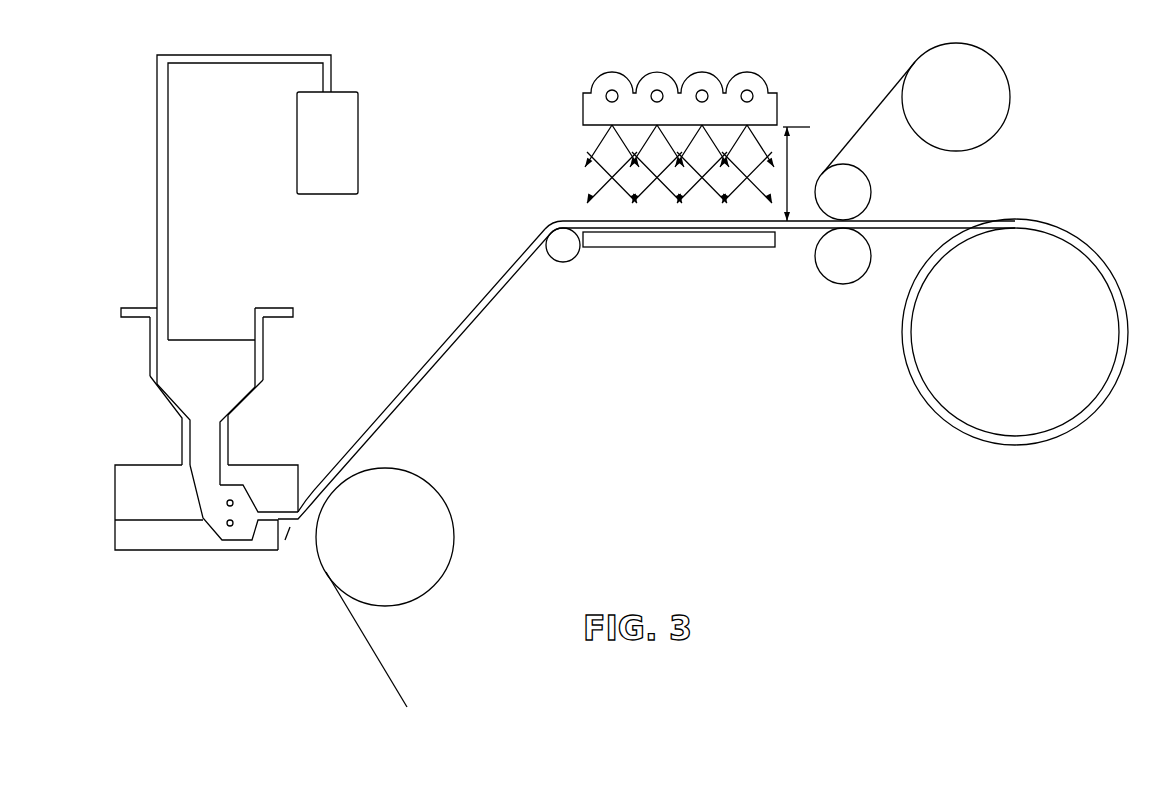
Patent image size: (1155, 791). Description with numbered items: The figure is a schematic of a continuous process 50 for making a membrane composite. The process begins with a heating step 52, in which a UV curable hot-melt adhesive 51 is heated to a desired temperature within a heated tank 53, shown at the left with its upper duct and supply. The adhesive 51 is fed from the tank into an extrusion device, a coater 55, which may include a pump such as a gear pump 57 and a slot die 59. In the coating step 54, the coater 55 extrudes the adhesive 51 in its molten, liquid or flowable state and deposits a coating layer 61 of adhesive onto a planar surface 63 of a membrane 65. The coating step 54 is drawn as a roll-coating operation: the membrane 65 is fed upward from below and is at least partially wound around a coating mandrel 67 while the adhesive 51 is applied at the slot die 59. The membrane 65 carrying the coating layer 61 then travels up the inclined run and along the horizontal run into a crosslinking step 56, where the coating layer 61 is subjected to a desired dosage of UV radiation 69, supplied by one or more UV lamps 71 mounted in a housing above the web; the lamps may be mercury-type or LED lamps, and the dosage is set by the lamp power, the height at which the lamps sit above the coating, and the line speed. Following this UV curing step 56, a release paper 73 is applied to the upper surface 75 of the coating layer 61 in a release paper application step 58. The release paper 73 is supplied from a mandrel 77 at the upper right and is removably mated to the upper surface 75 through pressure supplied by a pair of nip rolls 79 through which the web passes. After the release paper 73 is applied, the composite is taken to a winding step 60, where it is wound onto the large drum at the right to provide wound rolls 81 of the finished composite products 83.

The continuous process 50 is at (495, 90).
The UV curable hot-melt adhesive 51 is at (235, 362).
The heating step 52 is at (345, 358).
The heated tank 53 is at (247, 413).
The coating step 54 is at (275, 573).
The coater 55 is at (145, 550).
The crosslinking step 56 is at (565, 103).
The gear pump 57 is at (230, 527).
The release paper application step 58 is at (860, 102).
The slot die 59 is at (270, 510).
The winding step 60 is at (905, 380).
The coating layer 61 is at (402, 398).
The planar surface 63 is at (443, 362).
The membrane 65 is at (362, 633).
The coating mandrel 67 is at (440, 495).
The UV radiation 69 is at (613, 167).
The UV lamps 71 is at (747, 70).
The release paper 73 is at (855, 133).
The upper surface 75 is at (808, 214).
The mandrel 77 is at (1008, 80).
The nip rolls 79 is at (822, 283).
The wound rolls 81 is at (972, 430).
The composite products 83 is at (928, 220).